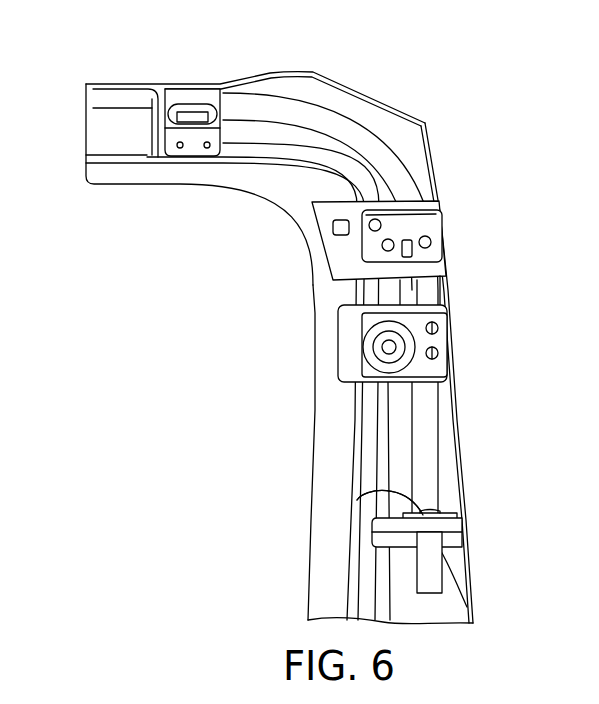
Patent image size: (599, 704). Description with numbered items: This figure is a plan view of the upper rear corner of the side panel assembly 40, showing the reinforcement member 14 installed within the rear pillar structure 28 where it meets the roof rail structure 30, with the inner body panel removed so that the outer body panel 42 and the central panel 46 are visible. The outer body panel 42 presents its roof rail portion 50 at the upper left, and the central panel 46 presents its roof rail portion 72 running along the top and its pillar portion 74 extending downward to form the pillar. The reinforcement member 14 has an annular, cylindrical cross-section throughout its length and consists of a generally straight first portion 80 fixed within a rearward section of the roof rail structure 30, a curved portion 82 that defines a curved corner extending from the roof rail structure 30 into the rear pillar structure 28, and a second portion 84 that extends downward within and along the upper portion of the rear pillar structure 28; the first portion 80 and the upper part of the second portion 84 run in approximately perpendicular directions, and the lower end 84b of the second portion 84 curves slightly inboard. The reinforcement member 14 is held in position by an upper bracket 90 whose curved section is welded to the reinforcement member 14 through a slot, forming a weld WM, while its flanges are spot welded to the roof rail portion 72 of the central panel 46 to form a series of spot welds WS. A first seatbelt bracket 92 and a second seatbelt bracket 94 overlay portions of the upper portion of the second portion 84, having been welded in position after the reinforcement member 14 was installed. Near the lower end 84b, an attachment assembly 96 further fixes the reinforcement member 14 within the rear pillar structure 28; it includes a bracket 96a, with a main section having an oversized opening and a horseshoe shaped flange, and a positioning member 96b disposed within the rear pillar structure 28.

The reinforcement member 14 is at (427, 434).
The rear pillar structure 28 is at (444, 154).
The roof rail structure 30 is at (240, 70).
The side panel assembly 40 is at (120, 196).
The outer body panel 42 is at (126, 92).
The central panel 46 is at (287, 85).
The roof rail portion 50 is at (107, 100).
The roof rail portion 72 is at (255, 152).
The pillar portion 74 is at (360, 423).
The first portion 80 is at (238, 105).
The curved portion 82 is at (345, 120).
The second portion 84 is at (412, 287).
The lower end 84b is at (430, 500).
The upper bracket 90 is at (175, 99).
The first seatbelt bracket 92 is at (423, 227).
The second seatbelt bracket 94 is at (440, 340).
The attachment assembly 96 is at (482, 527).
The bracket 96a is at (430, 580).
The positioning member 96b is at (360, 498).
The weld WM is at (198, 114).
The spot welds WS is at (207, 149).